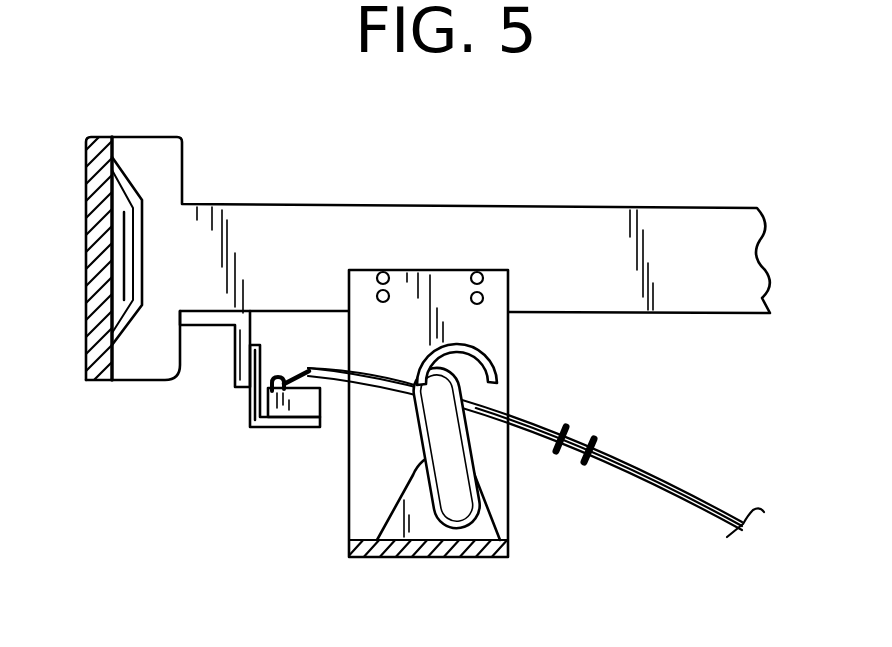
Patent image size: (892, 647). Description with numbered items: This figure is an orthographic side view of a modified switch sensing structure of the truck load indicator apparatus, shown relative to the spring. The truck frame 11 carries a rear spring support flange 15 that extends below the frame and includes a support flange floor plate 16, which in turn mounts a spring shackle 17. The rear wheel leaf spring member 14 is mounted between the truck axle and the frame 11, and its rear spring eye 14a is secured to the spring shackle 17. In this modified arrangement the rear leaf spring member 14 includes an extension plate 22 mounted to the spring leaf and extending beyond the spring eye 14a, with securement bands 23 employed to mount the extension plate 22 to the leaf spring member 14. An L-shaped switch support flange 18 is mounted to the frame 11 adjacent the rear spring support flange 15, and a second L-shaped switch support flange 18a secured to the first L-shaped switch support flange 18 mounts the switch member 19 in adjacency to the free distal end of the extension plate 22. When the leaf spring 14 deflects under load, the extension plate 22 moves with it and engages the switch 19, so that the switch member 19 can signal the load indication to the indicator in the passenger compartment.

The frame 11 is at (602, 226).
The rear wheel leaf spring member 14 is at (690, 488).
The rear spring eye 14a is at (500, 370).
The rear spring support flange 15 is at (495, 336).
The support flange floor plate 16 is at (364, 540).
The spring shackle 17 is at (453, 453).
The L-shaped switch support flange 18 is at (234, 357).
The second L-shaped switch support flange 18a is at (263, 427).
The switch member 19 is at (303, 408).
The extension plate 22 is at (373, 363).
The securement bands 23 is at (566, 427).